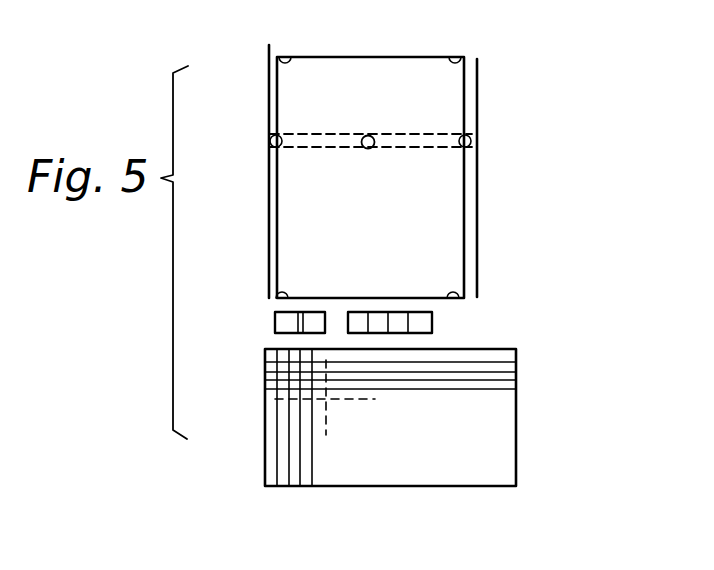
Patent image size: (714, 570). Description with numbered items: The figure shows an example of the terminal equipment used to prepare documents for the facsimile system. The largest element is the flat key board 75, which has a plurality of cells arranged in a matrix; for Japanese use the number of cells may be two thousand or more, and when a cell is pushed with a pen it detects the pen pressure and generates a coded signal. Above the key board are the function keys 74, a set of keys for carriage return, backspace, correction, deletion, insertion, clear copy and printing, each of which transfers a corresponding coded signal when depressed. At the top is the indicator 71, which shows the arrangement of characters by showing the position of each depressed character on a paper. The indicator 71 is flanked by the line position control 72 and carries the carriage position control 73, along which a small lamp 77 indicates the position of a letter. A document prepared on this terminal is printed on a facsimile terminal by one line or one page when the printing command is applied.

The indicator 71 is at (370, 177).
The line position control 72 is at (268, 105).
The carriage position control 73 is at (414, 149).
The function keys 74 is at (275, 325).
The flat key board 75 is at (519, 398).
The small lamp 77 is at (372, 136).